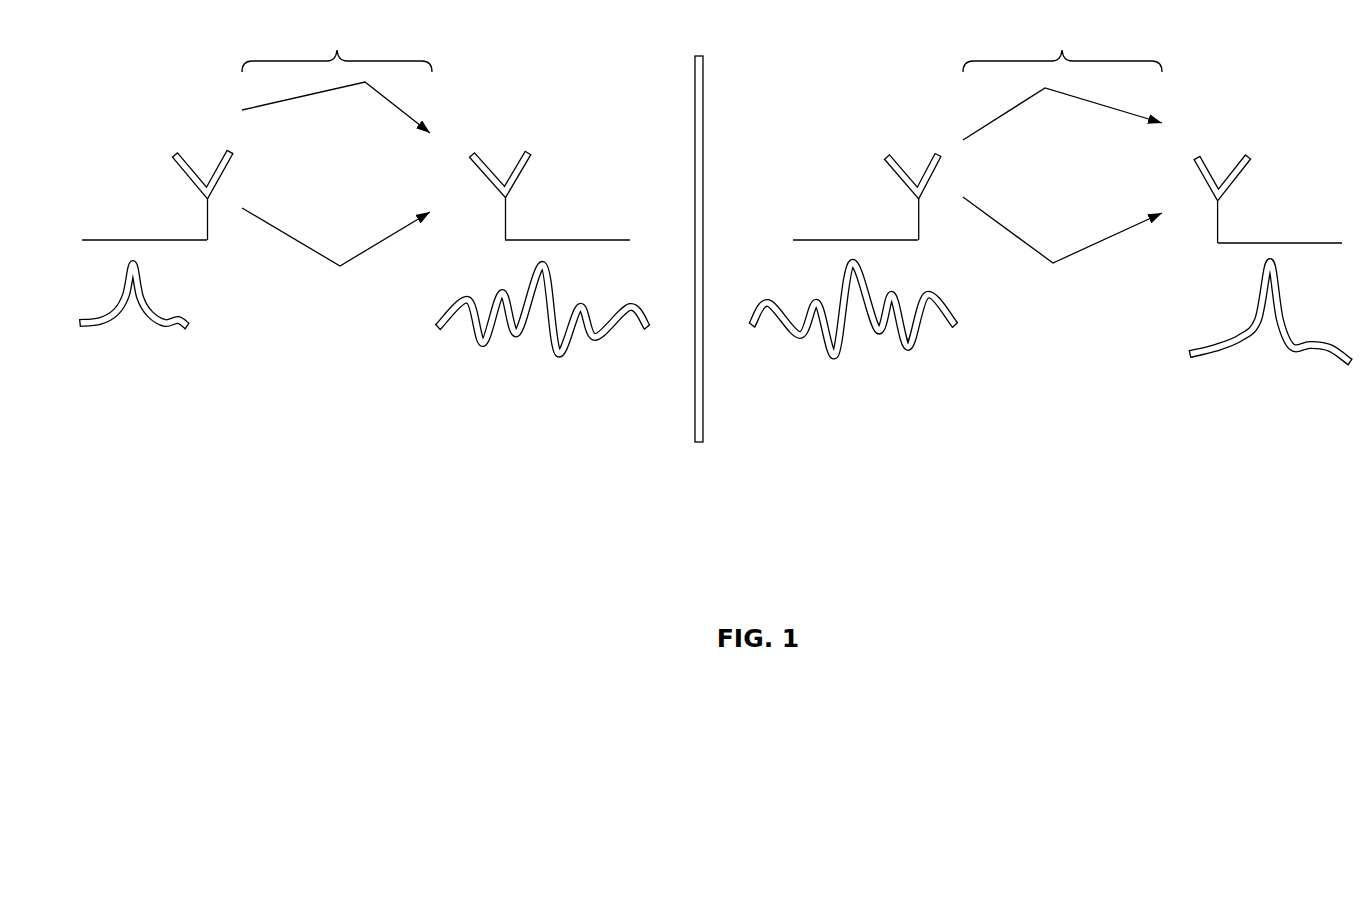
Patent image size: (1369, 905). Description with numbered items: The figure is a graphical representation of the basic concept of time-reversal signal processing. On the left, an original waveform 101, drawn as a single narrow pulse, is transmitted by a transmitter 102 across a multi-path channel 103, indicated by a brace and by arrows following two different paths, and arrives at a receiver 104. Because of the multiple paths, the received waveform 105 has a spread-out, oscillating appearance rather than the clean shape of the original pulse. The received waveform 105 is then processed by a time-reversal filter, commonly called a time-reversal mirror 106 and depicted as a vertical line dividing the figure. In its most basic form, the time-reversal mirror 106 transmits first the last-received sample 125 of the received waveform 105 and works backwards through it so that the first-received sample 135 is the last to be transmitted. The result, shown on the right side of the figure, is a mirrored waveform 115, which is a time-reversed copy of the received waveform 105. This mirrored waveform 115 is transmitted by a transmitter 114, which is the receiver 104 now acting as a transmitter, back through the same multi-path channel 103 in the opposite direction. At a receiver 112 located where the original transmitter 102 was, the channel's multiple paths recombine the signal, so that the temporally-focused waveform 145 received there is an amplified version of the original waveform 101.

The waveform 101 is at (92, 327).
The transmitter 102 is at (193, 163).
The multi-path channel 103 is at (702, 143).
The receiver 104 is at (513, 163).
The received waveform 105 is at (570, 347).
The time-reversal mirror 106 is at (705, 90).
The receiver 112 is at (1232, 163).
The transmitter 114 is at (905, 165).
The mirrored waveform 115 is at (843, 343).
The last-received sample 125 is at (437, 313).
The first-received sample 135 is at (653, 315).
The temporally-focused waveform 145 is at (1208, 357).